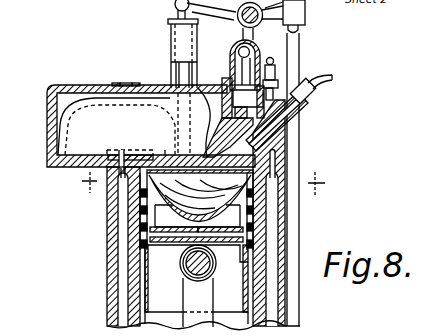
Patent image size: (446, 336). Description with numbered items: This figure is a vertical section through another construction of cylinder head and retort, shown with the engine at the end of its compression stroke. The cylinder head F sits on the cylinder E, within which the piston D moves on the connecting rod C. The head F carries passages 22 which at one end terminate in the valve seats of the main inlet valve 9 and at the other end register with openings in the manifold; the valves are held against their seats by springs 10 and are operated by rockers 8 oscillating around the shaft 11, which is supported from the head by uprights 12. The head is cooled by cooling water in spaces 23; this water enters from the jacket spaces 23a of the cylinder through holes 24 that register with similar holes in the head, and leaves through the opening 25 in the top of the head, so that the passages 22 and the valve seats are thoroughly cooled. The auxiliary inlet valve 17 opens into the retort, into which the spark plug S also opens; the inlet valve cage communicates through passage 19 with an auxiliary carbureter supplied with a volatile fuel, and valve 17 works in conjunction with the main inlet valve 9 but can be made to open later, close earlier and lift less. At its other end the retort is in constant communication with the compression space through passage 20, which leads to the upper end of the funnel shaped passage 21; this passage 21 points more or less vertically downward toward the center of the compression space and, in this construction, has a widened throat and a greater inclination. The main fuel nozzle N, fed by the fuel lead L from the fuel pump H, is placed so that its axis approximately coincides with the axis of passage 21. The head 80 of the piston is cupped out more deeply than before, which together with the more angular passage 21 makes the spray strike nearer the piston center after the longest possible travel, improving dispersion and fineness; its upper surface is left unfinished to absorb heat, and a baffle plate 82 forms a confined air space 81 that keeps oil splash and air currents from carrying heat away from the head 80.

The rockers 8 is at (305, 15).
The main inlet valve 9 is at (175, 6).
The valve springs 10 is at (171, 51).
The rocker shaft 11 is at (235, 20).
The uprights 12 is at (257, 35).
The auxiliary inlet valve 17 is at (227, 78).
The passage 19 is at (233, 48).
The passage 20 is at (297, 128).
The funnel shaped passage 21 is at (228, 139).
The passages 22 is at (120, 141).
The cooling water spaces 23 is at (98, 239).
The jacket spaces 23a is at (114, 125).
The holes 24 is at (110, 190).
The opening 25 is at (134, 79).
The piston head 80 is at (174, 218).
The confined air space 81 is at (220, 218).
The baffle plate 82 is at (175, 242).
The connecting rod C is at (214, 286).
The piston D is at (164, 299).
The cylinder E is at (299, 238).
The cylinder head F is at (47, 118).
The fuel pump H is at (248, 104).
The fuel lead L is at (333, 77).
The main fuel nozzle N is at (312, 100).
The spark plug S is at (274, 68).